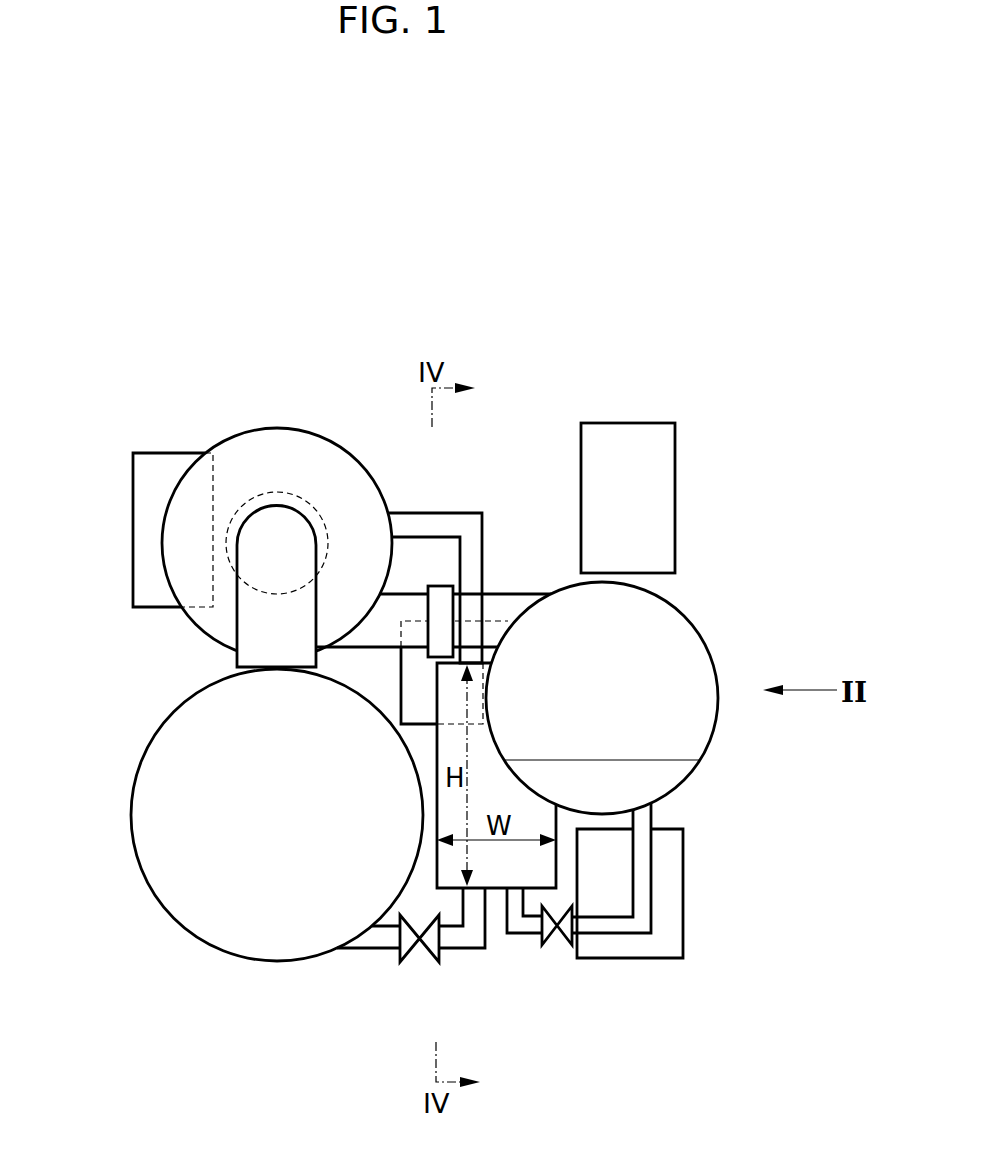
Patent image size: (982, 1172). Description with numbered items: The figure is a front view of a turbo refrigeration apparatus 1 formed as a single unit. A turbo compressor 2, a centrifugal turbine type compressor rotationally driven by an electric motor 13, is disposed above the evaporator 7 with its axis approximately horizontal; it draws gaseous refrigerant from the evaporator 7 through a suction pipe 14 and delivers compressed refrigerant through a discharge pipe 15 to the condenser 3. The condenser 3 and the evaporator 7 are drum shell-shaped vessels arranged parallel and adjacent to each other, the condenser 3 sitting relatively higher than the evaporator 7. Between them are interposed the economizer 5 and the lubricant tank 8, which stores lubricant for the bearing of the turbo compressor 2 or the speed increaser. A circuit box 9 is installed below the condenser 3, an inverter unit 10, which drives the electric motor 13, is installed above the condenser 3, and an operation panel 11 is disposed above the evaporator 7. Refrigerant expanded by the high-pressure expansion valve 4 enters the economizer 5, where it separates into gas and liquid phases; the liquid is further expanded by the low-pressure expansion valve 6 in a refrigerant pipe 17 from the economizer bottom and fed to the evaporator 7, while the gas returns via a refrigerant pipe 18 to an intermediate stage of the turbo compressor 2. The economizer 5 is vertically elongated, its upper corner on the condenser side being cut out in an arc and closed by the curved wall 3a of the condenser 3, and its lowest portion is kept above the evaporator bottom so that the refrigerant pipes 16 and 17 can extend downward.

The turbo refrigeration apparatus 1 is at (322, 304).
The turbo compressor 2 is at (273, 427).
The condenser 3 is at (607, 689).
The curved wall 3a is at (490, 742).
The high-pressure expansion valve 4 is at (560, 945).
The economizer 5 is at (437, 762).
The low-pressure expansion valve 6 is at (432, 962).
The evaporator 7 is at (140, 757).
The lubricant tank 8 is at (400, 688).
The circuit box 9 is at (684, 887).
The inverter unit 10 is at (676, 466).
The operation panel 11 is at (132, 518).
The electric motor 13 is at (297, 493).
The suction pipe 14 is at (237, 629).
The discharge pipe 15 is at (426, 592).
The refrigerant pipe 16 is at (622, 935).
The refrigerant pipe 17 is at (466, 950).
The refrigerant pipe 18 is at (483, 540).